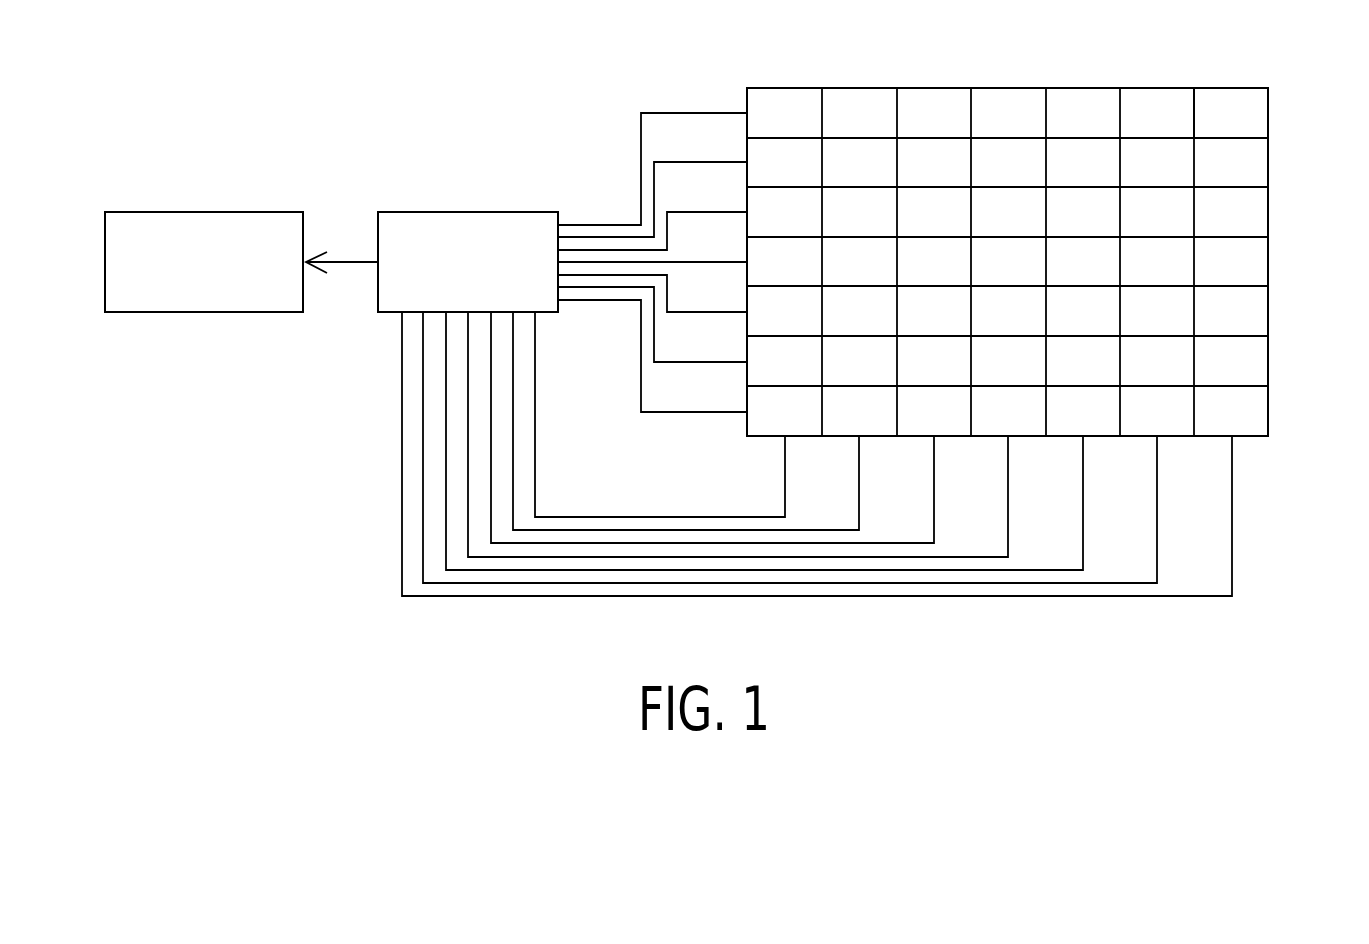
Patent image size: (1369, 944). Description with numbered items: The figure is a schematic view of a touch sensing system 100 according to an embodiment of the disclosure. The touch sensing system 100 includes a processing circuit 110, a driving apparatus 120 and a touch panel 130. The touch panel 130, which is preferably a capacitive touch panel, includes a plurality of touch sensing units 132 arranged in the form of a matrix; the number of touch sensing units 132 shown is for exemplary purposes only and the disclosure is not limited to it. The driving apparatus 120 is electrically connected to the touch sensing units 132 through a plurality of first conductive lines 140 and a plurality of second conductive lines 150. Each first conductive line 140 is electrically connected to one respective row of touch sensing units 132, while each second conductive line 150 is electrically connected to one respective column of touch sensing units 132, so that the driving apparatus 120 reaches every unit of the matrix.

The touch sensing system 100 is at (1353, 654).
The processing circuit 110 is at (205, 211).
The driving apparatus 120 is at (468, 211).
The touch panel 130 is at (1230, 87).
The touch sensing unit 132 is at (1260, 117).
The first conductive line 140 is at (694, 112).
The second conductive line 150 is at (1233, 515).